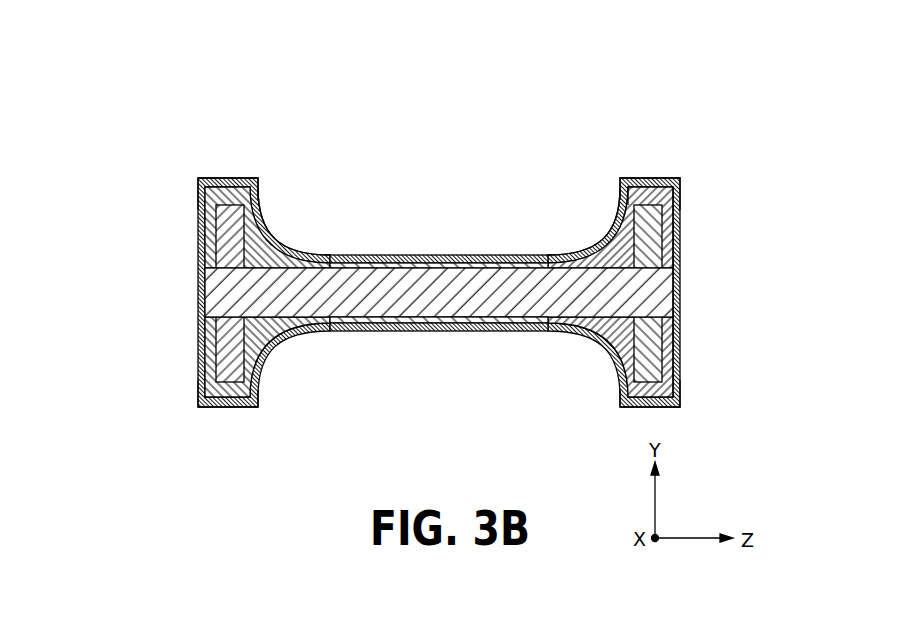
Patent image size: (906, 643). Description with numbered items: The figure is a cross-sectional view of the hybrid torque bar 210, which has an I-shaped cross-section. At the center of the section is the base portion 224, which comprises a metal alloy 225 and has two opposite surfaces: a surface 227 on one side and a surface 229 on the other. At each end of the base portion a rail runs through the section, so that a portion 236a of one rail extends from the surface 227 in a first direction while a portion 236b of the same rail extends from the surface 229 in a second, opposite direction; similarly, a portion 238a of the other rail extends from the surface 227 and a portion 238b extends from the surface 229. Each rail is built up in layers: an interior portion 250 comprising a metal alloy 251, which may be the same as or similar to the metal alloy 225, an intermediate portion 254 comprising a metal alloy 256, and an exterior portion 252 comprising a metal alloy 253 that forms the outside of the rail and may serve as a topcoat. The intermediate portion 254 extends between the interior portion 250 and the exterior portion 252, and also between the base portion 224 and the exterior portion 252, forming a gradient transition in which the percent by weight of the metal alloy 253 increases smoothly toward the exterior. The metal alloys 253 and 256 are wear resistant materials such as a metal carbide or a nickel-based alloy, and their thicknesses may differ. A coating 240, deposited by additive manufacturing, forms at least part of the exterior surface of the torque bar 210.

The torque bar 210 is at (425, 253).
The base portion 224 is at (527, 300).
The metal alloy 225 is at (473, 303).
The surface 227 is at (384, 262).
The surface 229 is at (415, 331).
The portion of rail 236a is at (220, 155).
The portion of rail 236b is at (192, 419).
The portion of rail 238a is at (650, 150).
The portion of rail 238b is at (605, 407).
The coating 240 is at (283, 223).
The interior portion 250 is at (655, 260).
The metal alloy 251 is at (650, 245).
The exterior portion 252 is at (618, 184).
The metal alloy 253 is at (199, 182).
The intermediate portion 254 is at (585, 250).
The metal alloy 256 is at (612, 228).